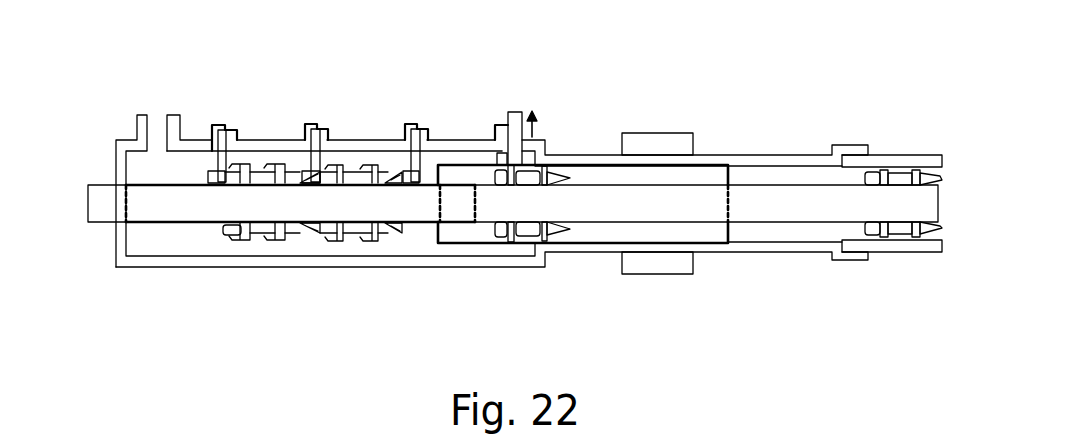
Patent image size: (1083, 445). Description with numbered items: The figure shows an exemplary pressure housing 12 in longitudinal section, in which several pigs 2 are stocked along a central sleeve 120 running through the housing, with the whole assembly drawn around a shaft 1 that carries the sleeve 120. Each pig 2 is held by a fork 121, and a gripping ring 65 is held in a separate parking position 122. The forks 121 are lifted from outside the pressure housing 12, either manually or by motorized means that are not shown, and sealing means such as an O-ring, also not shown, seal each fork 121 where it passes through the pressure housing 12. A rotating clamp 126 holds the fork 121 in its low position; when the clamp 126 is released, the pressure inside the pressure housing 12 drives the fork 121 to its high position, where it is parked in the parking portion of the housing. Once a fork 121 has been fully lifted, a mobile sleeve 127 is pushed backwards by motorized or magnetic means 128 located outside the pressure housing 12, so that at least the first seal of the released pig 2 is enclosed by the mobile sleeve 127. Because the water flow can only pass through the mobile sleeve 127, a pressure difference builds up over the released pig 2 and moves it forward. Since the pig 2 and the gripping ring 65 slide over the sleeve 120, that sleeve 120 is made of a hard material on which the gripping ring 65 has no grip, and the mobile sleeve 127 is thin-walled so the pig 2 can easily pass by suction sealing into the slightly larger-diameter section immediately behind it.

The shaft 1 is at (770, 203).
The pig 2 is at (353, 243).
The pressure housing 12 is at (365, 142).
The gripping ring 65 is at (409, 188).
The sleeve 120 is at (180, 223).
The fork 121 is at (324, 128).
The parking position 122 is at (318, 172).
The rotating clamp 126 is at (319, 141).
The mobile sleeve 127 is at (580, 155).
The motorized or magnetic means 128 is at (675, 133).